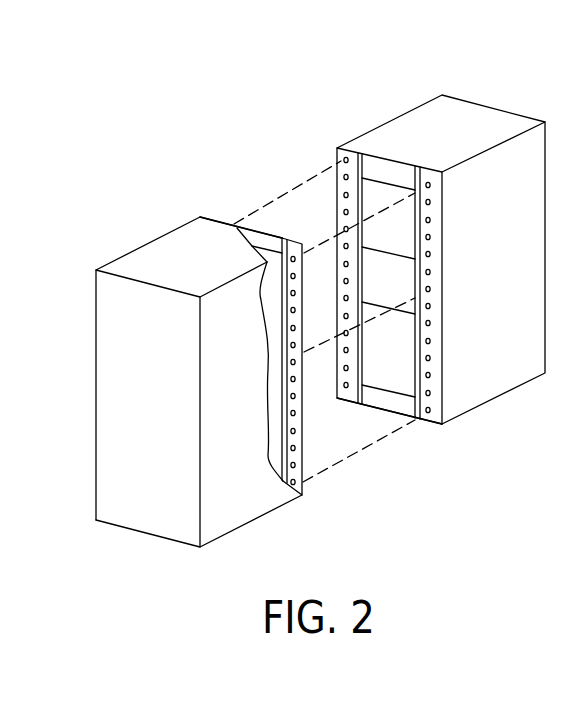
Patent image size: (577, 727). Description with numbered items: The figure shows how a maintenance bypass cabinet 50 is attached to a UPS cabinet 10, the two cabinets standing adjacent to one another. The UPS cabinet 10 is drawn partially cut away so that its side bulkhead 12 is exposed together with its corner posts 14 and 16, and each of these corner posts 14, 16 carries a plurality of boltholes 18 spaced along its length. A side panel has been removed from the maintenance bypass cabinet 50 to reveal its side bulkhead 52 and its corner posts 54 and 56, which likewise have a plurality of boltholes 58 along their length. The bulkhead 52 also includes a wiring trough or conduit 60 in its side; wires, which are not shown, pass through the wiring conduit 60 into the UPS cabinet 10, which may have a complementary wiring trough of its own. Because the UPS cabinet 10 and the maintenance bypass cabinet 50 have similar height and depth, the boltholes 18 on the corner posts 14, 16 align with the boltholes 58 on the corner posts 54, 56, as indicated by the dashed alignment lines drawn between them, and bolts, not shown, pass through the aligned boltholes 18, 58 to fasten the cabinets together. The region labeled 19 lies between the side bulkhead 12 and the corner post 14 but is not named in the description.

The UPS cabinet 10 is at (112, 262).
The side bulkhead 12 is at (268, 300).
The corner post 14 is at (302, 486).
The corner post 16 is at (212, 216).
The boltholes 18 is at (296, 465).
The gap 19 is at (277, 372).
The maintenance bypass cabinet 50 is at (457, 99).
The side bulkhead 52 is at (378, 188).
The corner post 54 is at (443, 413).
The corner post 56 is at (337, 160).
The boltholes 58 is at (427, 412).
The wiring trough or conduit 60 is at (407, 280).